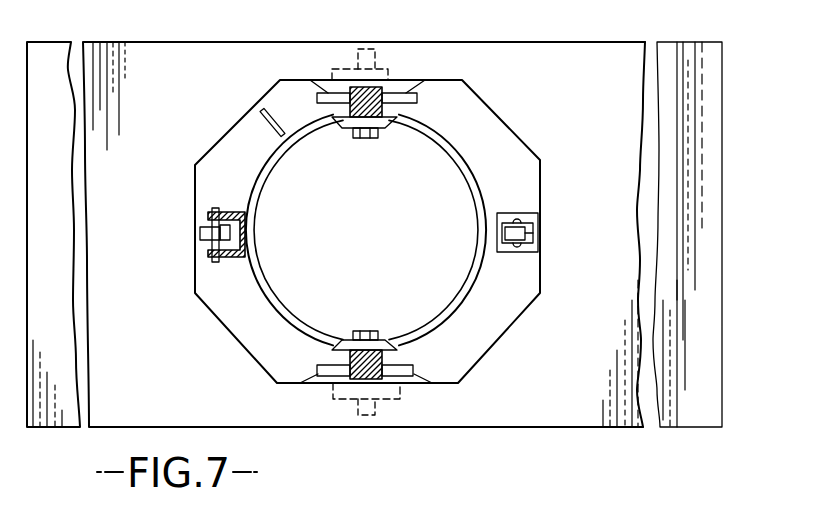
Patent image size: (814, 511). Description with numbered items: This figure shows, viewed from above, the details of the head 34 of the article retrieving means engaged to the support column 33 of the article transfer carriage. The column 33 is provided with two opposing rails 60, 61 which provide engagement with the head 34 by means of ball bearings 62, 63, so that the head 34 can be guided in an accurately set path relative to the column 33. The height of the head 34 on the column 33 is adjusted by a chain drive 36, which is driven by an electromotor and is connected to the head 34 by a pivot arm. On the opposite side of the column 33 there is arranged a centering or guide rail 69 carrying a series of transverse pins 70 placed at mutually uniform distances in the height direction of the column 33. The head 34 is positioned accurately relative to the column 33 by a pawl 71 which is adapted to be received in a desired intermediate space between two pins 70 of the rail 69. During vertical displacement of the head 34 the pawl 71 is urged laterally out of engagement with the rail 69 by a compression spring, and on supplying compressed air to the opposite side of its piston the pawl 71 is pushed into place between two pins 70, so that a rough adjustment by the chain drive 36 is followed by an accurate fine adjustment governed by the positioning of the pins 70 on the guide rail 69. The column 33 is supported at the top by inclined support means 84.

The column 33 is at (460, 143).
The head 34 is at (568, 70).
The chain drive 36 is at (533, 237).
The rail 60 is at (380, 92).
The rail 61 is at (370, 362).
The ball bearings 62 is at (326, 95).
The ball bearings 63 is at (371, 50).
The guide rail 69 is at (238, 212).
The transverse pins 70 is at (216, 221).
The pawl 71 is at (203, 233).
The inclined support means 84 is at (271, 126).